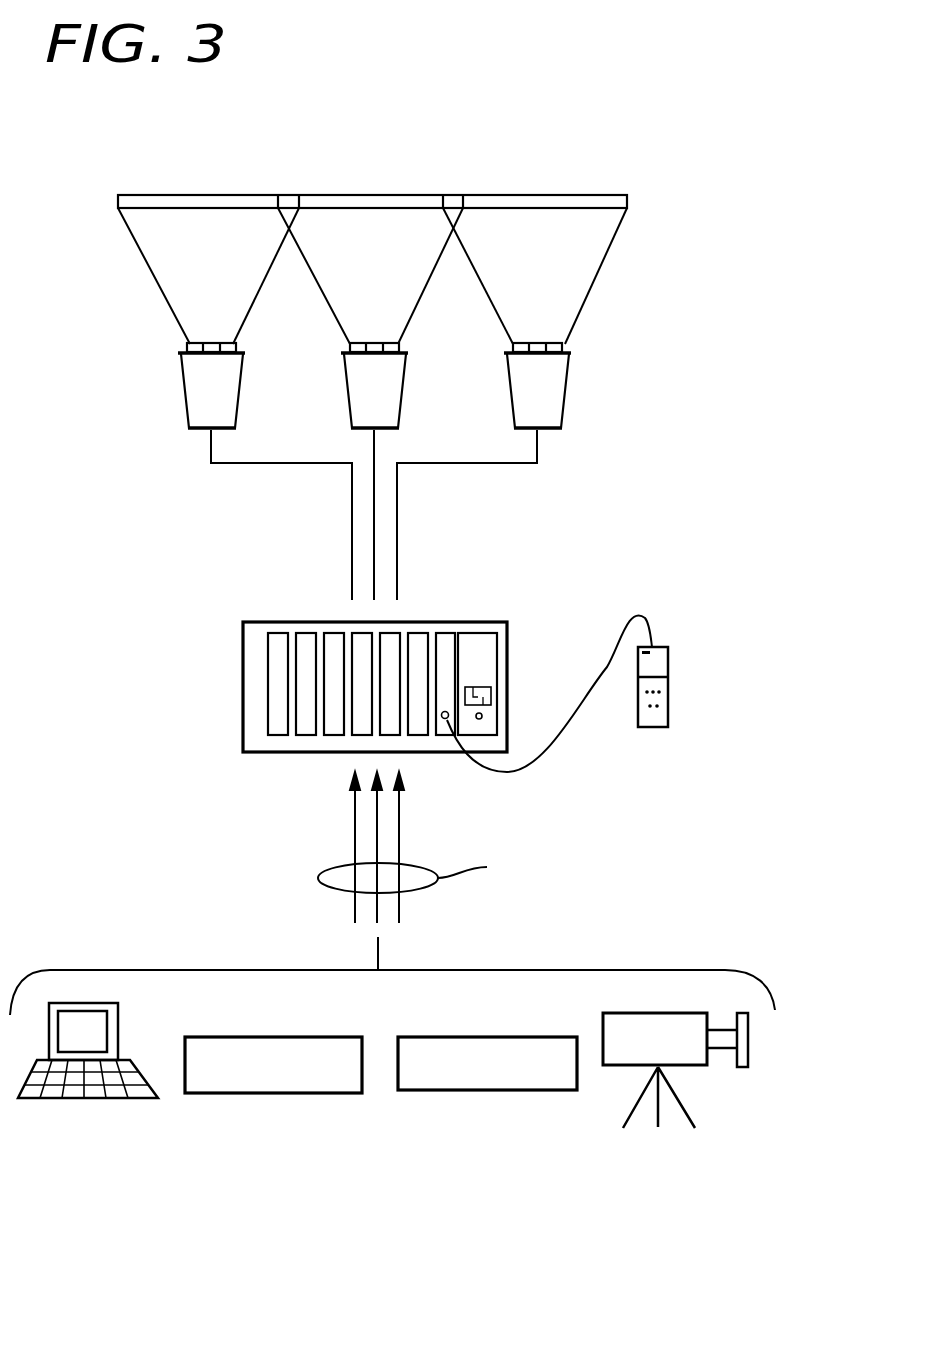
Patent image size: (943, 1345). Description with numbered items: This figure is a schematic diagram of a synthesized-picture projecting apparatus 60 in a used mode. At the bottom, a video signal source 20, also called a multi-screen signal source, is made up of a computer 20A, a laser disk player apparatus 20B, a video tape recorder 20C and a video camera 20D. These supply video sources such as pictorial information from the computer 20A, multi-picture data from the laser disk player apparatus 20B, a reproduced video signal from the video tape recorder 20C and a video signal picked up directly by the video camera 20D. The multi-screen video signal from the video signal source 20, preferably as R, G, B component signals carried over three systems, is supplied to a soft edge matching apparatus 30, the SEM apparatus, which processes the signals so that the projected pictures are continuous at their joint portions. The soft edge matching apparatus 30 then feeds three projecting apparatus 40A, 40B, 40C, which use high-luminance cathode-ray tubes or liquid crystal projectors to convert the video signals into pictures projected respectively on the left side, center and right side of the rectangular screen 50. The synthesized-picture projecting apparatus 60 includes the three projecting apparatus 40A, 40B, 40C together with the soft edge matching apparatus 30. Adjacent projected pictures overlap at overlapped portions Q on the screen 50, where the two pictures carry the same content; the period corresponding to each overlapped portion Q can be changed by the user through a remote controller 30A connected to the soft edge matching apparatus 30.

The screen 50 is at (629, 195).
The overlapped portion Q is at (288, 192).
The projecting apparatus 40A is at (185, 408).
The projecting apparatus 40B is at (406, 412).
The projecting apparatus 40C is at (570, 415).
The soft edge matching apparatus 30 is at (243, 722).
The remote controller 30A is at (668, 697).
The synthesized-picture projecting apparatus 60 is at (115, 591).
The video signal source 20 is at (740, 968).
The computer 20A is at (74, 1100).
The laser disk player apparatus 20B is at (228, 1037).
The video tape recorder 20C is at (441, 1037).
The video camera 20D is at (703, 1067).